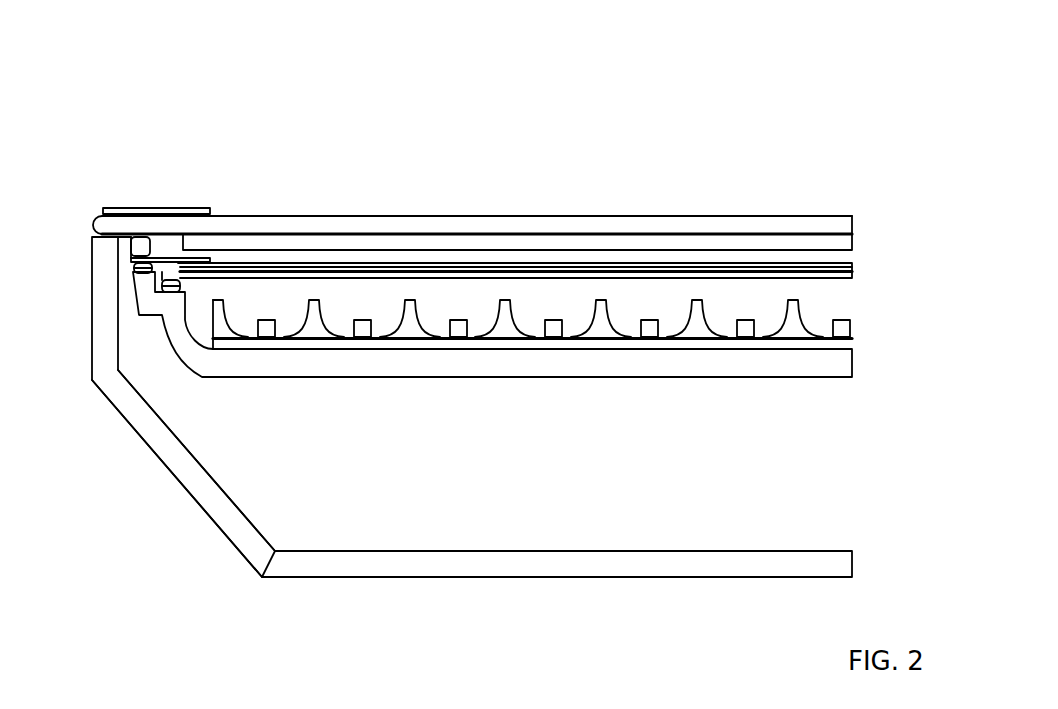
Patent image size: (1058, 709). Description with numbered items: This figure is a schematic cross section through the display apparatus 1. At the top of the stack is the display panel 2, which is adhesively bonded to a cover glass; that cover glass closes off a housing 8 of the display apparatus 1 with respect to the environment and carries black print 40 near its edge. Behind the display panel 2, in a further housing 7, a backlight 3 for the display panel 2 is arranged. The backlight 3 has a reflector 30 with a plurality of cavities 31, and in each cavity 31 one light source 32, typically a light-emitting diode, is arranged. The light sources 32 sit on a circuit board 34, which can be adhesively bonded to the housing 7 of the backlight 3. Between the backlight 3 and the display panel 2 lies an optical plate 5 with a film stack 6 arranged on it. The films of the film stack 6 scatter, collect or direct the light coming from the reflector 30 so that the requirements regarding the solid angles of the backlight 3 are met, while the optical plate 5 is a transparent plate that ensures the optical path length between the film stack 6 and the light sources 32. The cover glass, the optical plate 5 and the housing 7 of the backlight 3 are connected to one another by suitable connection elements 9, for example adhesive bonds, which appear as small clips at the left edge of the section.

The display apparatus 1 is at (166, 509).
The display panel 2 is at (845, 243).
The backlight 3 is at (523, 375).
The optical plate 5 is at (840, 279).
The film stack 6 is at (850, 262).
The housing 7 is at (375, 372).
The housing 8 is at (450, 562).
The connection elements 9 is at (168, 284).
The reflector 30 is at (600, 332).
The cavities 31 is at (444, 304).
The light source 32 is at (552, 336).
The circuit board 34 is at (847, 345).
The black print 40 is at (128, 208).